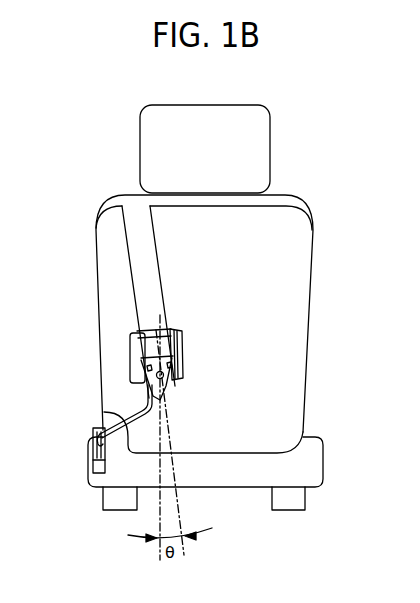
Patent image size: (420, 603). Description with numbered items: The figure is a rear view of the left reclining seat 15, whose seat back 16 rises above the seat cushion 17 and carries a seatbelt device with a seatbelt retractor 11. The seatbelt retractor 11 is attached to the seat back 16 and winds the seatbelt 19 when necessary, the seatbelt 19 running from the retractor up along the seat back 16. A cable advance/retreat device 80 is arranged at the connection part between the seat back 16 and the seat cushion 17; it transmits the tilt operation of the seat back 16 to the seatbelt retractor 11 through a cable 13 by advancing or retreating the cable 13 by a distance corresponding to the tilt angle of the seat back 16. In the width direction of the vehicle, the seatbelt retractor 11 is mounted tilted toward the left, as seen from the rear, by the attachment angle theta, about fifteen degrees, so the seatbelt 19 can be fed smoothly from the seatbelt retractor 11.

The seatbelt retractor 11 is at (129, 352).
The cable 13 is at (130, 409).
The reclining seat 15 is at (281, 143).
The seat back 16 is at (284, 312).
The seat cushion 17 is at (312, 460).
The seatbelt 19 is at (145, 262).
The cable advance/retreat device 80 is at (93, 468).